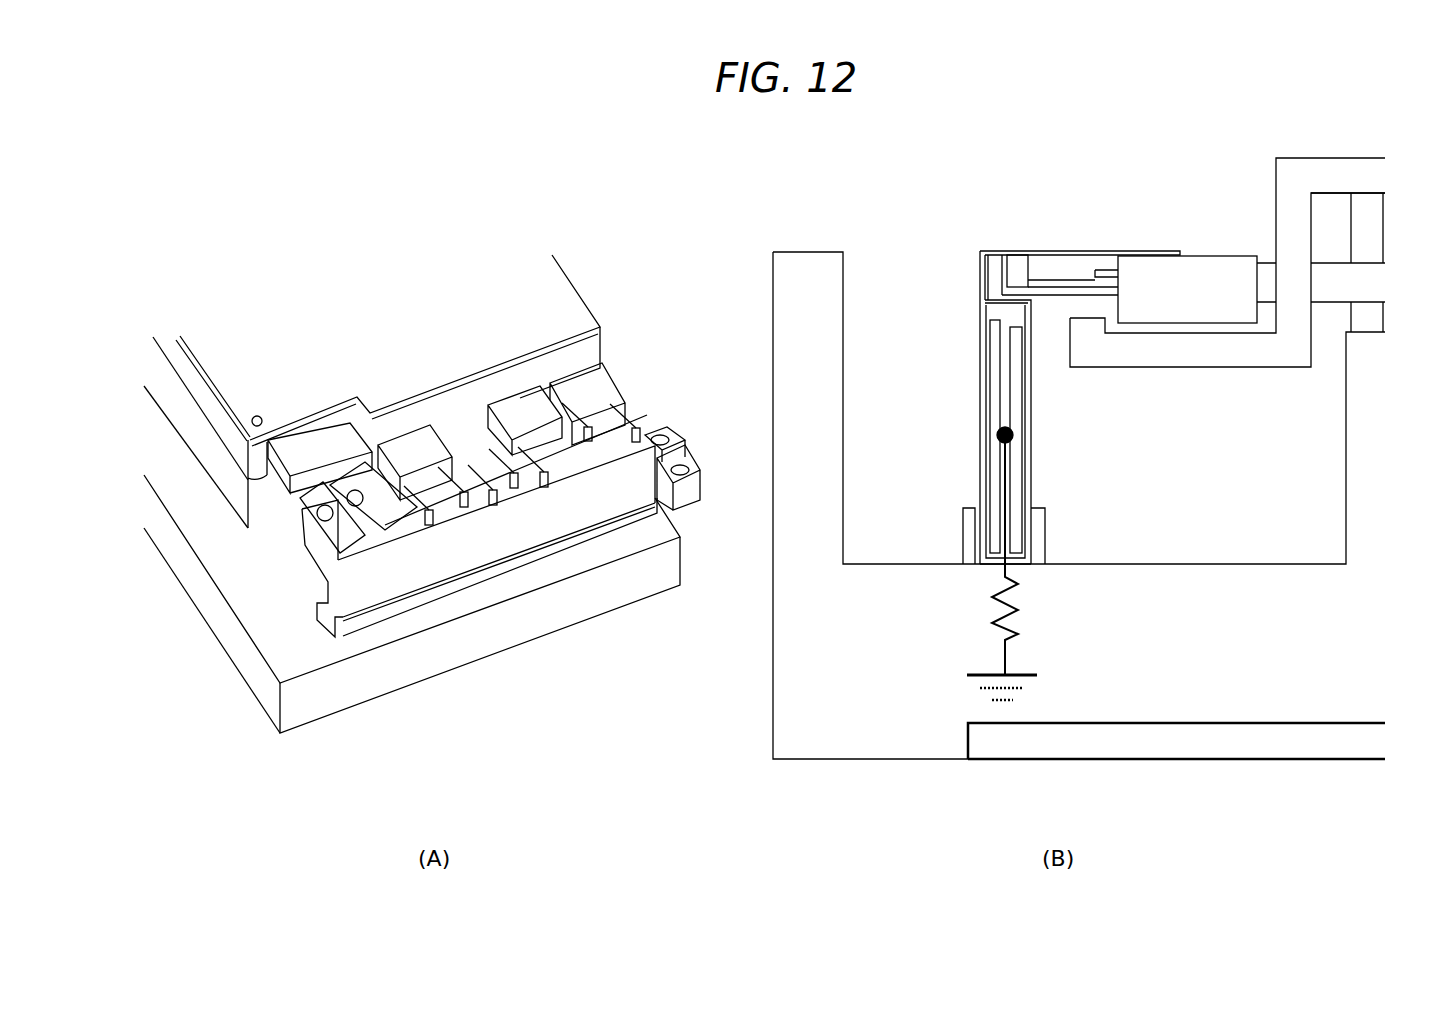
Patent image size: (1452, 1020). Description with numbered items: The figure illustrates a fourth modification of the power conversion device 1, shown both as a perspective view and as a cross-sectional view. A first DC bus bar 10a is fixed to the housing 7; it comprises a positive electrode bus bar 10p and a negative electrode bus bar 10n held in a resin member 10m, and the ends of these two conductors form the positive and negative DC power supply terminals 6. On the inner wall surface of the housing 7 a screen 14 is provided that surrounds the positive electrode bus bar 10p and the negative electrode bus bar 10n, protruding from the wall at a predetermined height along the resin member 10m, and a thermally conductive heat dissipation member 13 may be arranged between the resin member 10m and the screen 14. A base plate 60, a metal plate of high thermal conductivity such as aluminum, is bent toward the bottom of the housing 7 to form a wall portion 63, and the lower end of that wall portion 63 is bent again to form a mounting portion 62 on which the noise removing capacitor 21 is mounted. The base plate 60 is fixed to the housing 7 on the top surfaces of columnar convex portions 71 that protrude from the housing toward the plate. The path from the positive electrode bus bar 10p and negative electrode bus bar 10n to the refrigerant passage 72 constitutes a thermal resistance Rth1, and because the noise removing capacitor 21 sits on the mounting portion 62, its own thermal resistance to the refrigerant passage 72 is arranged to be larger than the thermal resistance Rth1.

The power conversion device 1 is at (858, 205).
The DC power supply terminals 6 is at (687, 440).
The housing 7 is at (305, 705).
The first DC bus bar 10a is at (548, 520).
The resin member 10m is at (980, 470).
The negative electrode bus bar 10n is at (1016, 362).
The positive electrode bus bar 10p is at (992, 370).
The heat dissipation member 13 is at (1045, 548).
The screen 14 is at (488, 572).
The noise removing capacitor 21 is at (510, 405).
The base plate 60 is at (445, 350).
The mounting portion 62 is at (1244, 368).
The wall portion 63 is at (1316, 347).
The convex portions 71 is at (1383, 225).
The refrigerant passage 72 is at (1050, 750).
The thermal resistance Rth1 is at (993, 603).